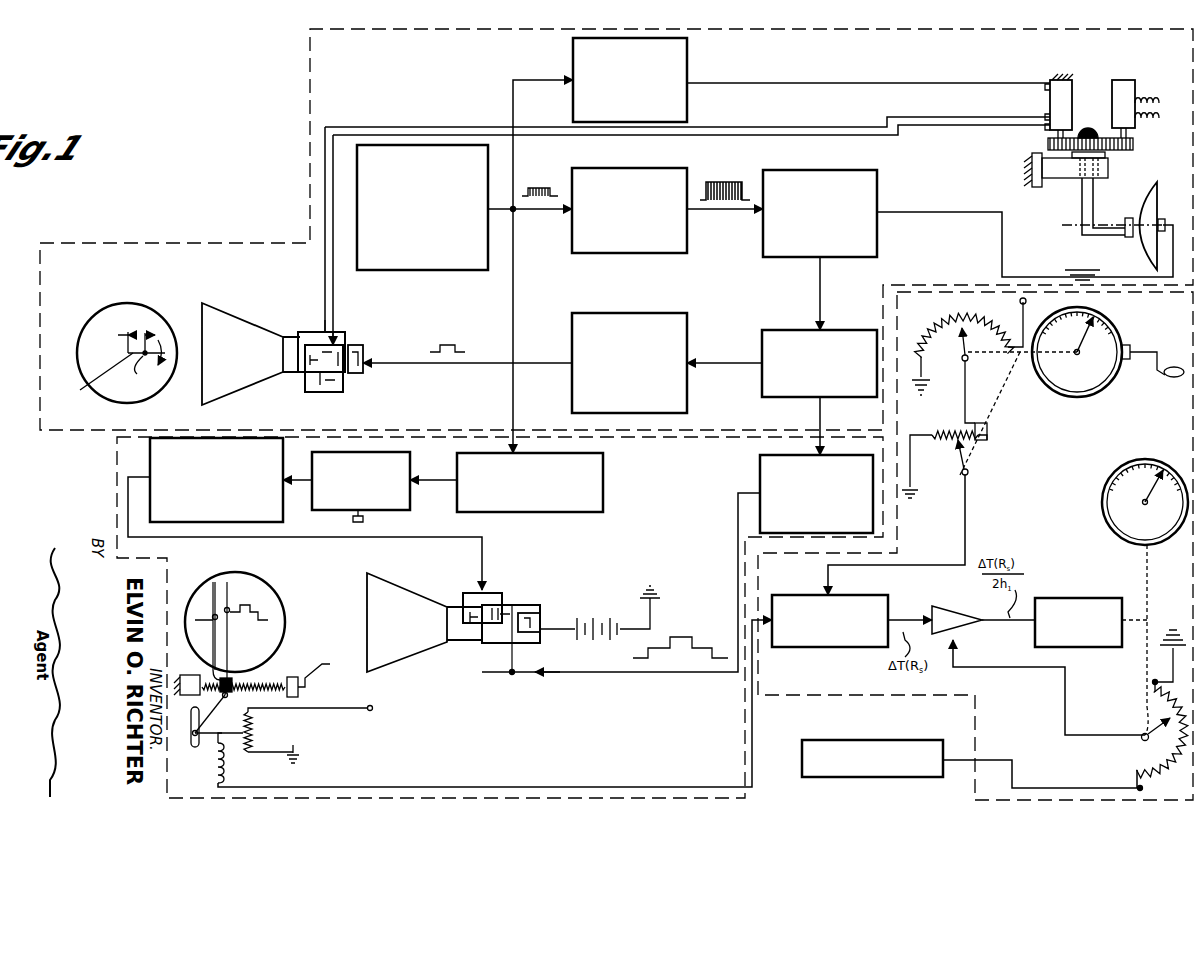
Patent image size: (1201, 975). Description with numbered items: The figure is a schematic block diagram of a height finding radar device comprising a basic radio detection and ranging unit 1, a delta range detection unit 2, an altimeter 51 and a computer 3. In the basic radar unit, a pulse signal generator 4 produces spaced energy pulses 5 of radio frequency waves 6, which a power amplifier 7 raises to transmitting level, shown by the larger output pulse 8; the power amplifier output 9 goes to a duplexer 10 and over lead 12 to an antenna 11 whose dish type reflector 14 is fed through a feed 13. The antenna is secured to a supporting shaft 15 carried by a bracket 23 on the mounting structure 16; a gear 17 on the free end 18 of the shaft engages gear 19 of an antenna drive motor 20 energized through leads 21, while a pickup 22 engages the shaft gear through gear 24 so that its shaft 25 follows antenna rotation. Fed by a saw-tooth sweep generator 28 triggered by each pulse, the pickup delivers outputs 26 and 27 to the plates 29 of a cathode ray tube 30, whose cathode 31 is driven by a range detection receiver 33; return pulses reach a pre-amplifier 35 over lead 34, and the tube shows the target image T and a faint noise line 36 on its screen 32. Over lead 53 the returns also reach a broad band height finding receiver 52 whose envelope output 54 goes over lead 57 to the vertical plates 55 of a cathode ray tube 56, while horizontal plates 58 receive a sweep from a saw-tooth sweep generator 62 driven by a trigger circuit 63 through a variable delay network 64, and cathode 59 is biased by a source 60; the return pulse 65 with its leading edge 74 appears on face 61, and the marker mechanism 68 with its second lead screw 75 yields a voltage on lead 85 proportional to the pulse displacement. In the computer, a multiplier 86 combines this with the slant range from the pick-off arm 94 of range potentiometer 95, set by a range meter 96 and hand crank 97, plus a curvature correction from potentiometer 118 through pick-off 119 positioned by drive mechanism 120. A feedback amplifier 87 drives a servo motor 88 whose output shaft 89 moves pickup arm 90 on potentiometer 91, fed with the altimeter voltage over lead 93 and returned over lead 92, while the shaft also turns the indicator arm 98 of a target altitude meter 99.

The basic radio detection and ranging unit 1 is at (310, 221).
The delta range detection unit 2 is at (115, 478).
The computer 3 is at (894, 700).
The pulse signal generator 4 is at (444, 270).
The energy pulses 5 is at (540, 186).
The radio frequency waves 6 is at (540, 200).
The power amplifier 7 is at (645, 253).
The power amplifier output pulse 8 is at (730, 184).
The power amplifier output 9 is at (718, 205).
The duplexer 10 is at (868, 237).
The antenna 11 is at (1155, 187).
The lead 12 is at (945, 215).
The feed 13 is at (1165, 220).
The dish type reflector 14 is at (1120, 160).
The supporting shaft 15 is at (1087, 212).
The mounting structure 16 is at (1036, 187).
The gear 17 is at (1103, 137).
The free end of shaft 18 is at (1088, 128).
The gear 19 is at (1127, 152).
The antenna drive motor 20 is at (1135, 96).
The leads 21 is at (1163, 125).
The pickup 22 is at (1068, 56).
The bracket 23 is at (1028, 180).
The gear 24 is at (1048, 152).
The shaft 25 is at (1078, 160).
The output 26 is at (790, 126).
The output 27 is at (905, 125).
The saw-tooth sweep generator 28 is at (687, 80).
The horizontal and vertical plates 29 is at (305, 328).
The cathode ray tube 30 is at (252, 325).
The cathode 31 is at (360, 348).
The PPI scope screen 32 is at (90, 315).
The range detection receiver 33 is at (570, 325).
The lead 34 is at (820, 283).
The pre-amplifier 35 is at (762, 338).
The faint line 36 is at (91, 384).
The altimeter 51 is at (802, 755).
The broad band height finding receiver 52 is at (760, 470).
The lead 53 is at (820, 413).
The output signal wave form 54 is at (690, 637).
The vertical plates 55 is at (478, 645).
The cathode ray tube 56 is at (428, 585).
The lead 57 is at (622, 675).
The horizontal plates 58 is at (495, 612).
The cathode 59 is at (528, 612).
The source of electrical potential 60 is at (590, 615).
The face 61 is at (268, 590).
The saw-tooth sweep generator 62 is at (283, 462).
The trigger circuit 63 is at (603, 472).
The delay network 64 is at (410, 462).
The return pulse 65 is at (232, 600).
The mechanism 68 is at (268, 682).
The leading edge 74 is at (213, 612).
The second lead screw 75 is at (213, 582).
The delta T output lead 85 is at (645, 785).
The multiplier 86 is at (840, 647).
The feedback amplifier 87 is at (948, 610).
The servo motor 88 is at (1062, 598).
The output shaft 89 is at (1148, 600).
The potentiometer pickup arm 90 is at (1138, 728).
The potentiometer 91 is at (1160, 760).
The lead 92 is at (1007, 655).
The lead 93 is at (1080, 785).
The pick-off arm 94 is at (968, 345).
The range potentiometer 95 is at (928, 325).
The range meter 96 is at (1120, 337).
The hand crank 97 is at (1160, 377).
The indicator arm 98 is at (1140, 478).
The target altitude meter 99 is at (1104, 488).
The potentiometer 118 is at (935, 437).
The pick-off 119 is at (958, 452).
The drive mechanism 120 is at (992, 405).